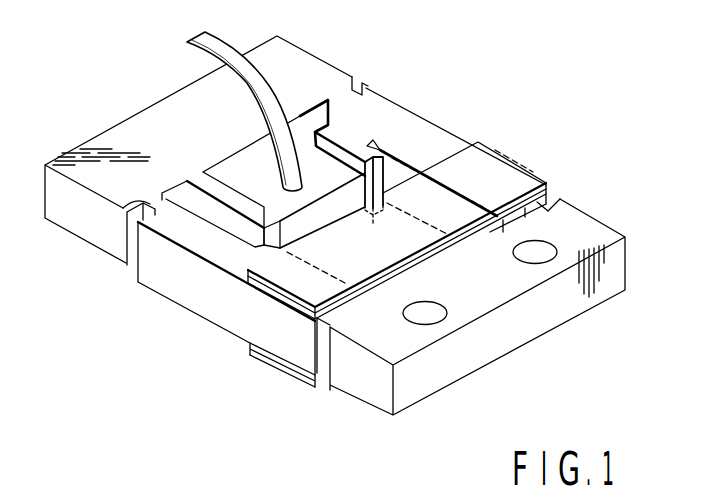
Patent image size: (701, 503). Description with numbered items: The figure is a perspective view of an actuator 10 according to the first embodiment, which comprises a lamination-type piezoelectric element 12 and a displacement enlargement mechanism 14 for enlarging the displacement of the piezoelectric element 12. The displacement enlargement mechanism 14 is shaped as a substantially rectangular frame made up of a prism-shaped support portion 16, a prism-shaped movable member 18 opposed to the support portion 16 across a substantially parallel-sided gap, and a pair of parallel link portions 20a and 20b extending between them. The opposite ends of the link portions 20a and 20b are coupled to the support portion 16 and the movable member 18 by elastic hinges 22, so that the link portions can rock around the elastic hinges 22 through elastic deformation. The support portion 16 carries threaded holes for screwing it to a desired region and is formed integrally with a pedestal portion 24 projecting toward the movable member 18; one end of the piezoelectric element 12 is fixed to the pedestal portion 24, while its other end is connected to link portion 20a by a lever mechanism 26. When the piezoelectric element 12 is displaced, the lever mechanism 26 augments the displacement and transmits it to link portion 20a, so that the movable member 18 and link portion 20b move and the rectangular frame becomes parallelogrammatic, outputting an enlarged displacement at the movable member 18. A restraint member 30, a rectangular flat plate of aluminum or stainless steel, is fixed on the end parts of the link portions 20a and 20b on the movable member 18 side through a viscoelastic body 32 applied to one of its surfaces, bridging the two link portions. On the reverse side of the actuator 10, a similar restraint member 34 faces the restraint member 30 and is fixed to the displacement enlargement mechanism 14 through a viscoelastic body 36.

The actuator 10 is at (410, 85).
The lamination-type piezoelectric element 12 is at (272, 190).
The displacement enlargement mechanism 14 is at (319, 226).
The support portion 16 is at (143, 132).
The movable member 18 is at (527, 327).
The link portion 20a is at (432, 122).
The link portion 20b is at (197, 283).
The elastic hinges 22 is at (121, 203).
The pedestal portion 24 is at (251, 208).
The lever mechanism 26 is at (373, 145).
The restraint member 30 is at (497, 167).
The viscoelastic body 32 is at (546, 190).
The restraint member 34 is at (249, 347).
The viscoelastic body 36 is at (282, 349).